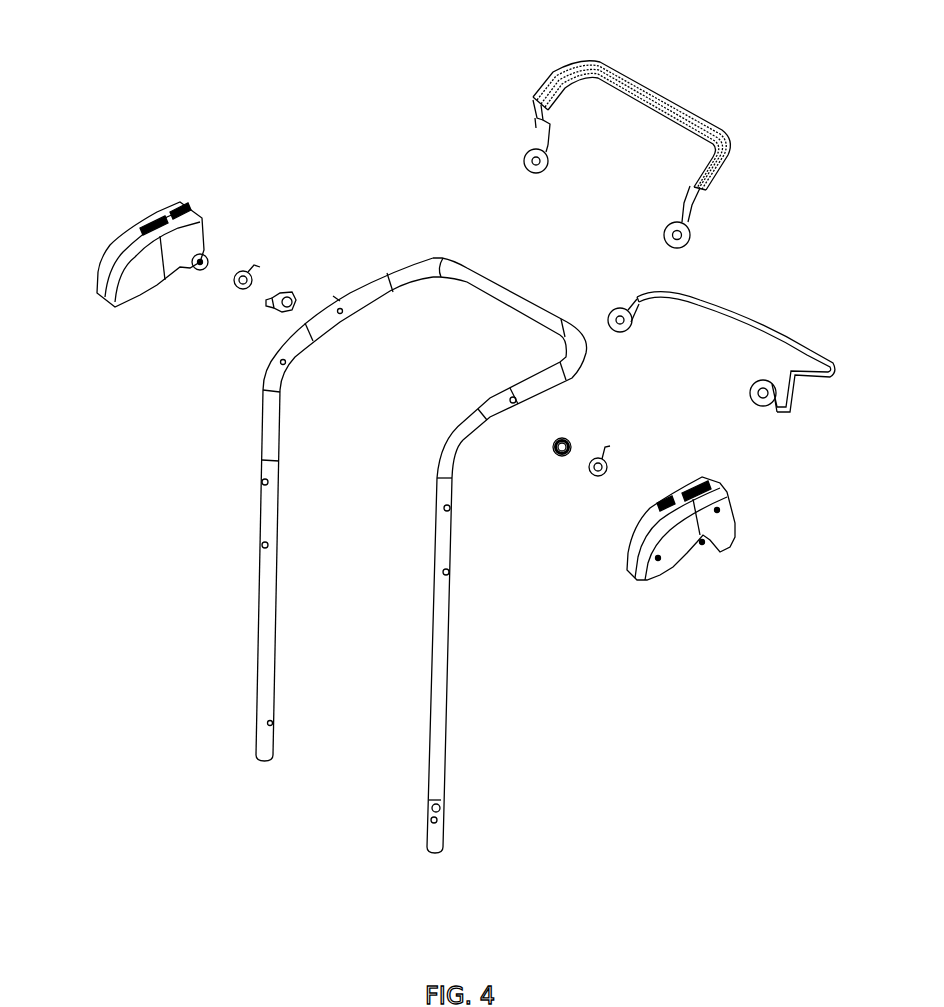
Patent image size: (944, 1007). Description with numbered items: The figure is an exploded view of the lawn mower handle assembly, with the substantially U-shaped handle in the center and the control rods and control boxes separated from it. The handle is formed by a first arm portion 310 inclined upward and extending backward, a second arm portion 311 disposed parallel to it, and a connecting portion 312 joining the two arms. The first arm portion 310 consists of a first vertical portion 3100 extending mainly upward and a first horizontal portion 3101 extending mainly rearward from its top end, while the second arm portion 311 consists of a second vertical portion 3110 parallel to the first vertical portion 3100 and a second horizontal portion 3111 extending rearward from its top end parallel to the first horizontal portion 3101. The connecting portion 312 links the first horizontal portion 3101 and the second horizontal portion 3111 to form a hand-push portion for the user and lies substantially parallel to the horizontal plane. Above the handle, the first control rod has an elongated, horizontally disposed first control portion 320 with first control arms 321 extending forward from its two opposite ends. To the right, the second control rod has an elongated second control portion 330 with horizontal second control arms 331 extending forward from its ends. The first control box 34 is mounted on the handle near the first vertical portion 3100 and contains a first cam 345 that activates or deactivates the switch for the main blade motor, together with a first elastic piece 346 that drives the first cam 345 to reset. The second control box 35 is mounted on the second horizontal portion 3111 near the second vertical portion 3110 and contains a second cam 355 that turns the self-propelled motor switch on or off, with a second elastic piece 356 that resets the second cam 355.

The first arm portion 310 is at (353, 524).
The first vertical portion 3100 is at (262, 538).
The first horizontal portion 3101 is at (336, 298).
The connecting portion 312 is at (497, 283).
The second horizontal portion 3111 is at (532, 385).
The second vertical portion 3110 is at (440, 613).
The second arm portion 311 is at (438, 700).
The first control portion 320 is at (649, 140).
The first control arm 321 is at (548, 82).
The second control portion 330 is at (748, 358).
The horizontal second control arm 331 is at (810, 377).
The first control box 34 is at (130, 248).
The first cam 345 is at (267, 308).
The first elastic piece 346 is at (253, 267).
The second control box 35 is at (693, 530).
The second cam 355 is at (567, 432).
The second elastic piece 356 is at (610, 462).